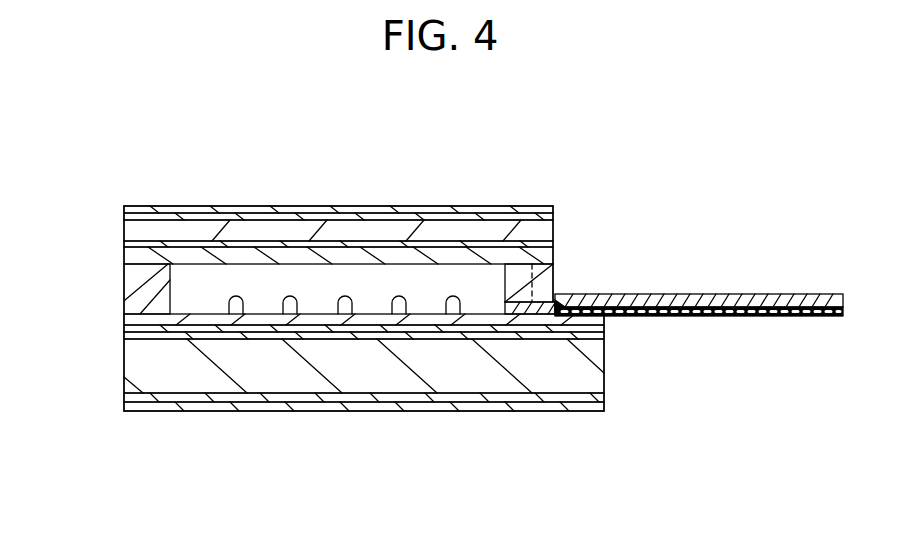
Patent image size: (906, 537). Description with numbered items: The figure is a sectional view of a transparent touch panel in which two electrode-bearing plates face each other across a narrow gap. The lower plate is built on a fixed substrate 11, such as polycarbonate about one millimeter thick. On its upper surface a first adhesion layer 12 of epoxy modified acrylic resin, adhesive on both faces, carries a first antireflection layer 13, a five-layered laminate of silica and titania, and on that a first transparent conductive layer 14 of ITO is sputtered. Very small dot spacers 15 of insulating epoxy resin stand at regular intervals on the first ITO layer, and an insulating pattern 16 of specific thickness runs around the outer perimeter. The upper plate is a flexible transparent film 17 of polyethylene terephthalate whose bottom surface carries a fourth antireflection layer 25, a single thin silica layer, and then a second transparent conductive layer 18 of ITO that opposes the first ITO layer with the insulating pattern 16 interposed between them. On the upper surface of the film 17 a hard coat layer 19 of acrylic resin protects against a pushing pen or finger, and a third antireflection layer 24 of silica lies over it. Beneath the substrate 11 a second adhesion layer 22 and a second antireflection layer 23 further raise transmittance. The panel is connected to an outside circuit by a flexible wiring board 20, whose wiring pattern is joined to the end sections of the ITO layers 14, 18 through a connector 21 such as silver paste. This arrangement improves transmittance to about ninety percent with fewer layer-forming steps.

The substrate 11 is at (353, 378).
The first adhesion layer 12 is at (256, 334).
The first antireflection layer 13 is at (187, 327).
The first transparent conductive layer 14 is at (130, 318).
The dot spacers 15 is at (292, 306).
The insulating pattern 16 is at (130, 272).
The flexible transparent film 17 is at (200, 228).
The second transparent conductive layer 18 is at (338, 253).
The hard coat layer 19 is at (158, 214).
The flexible wiring board 20 is at (738, 317).
The connector 21 is at (565, 297).
The second adhesion layer 22 is at (406, 397).
The second antireflection layer 23 is at (457, 406).
The third antireflection layer 24 is at (140, 207).
The fourth antireflection layer 25 is at (282, 243).